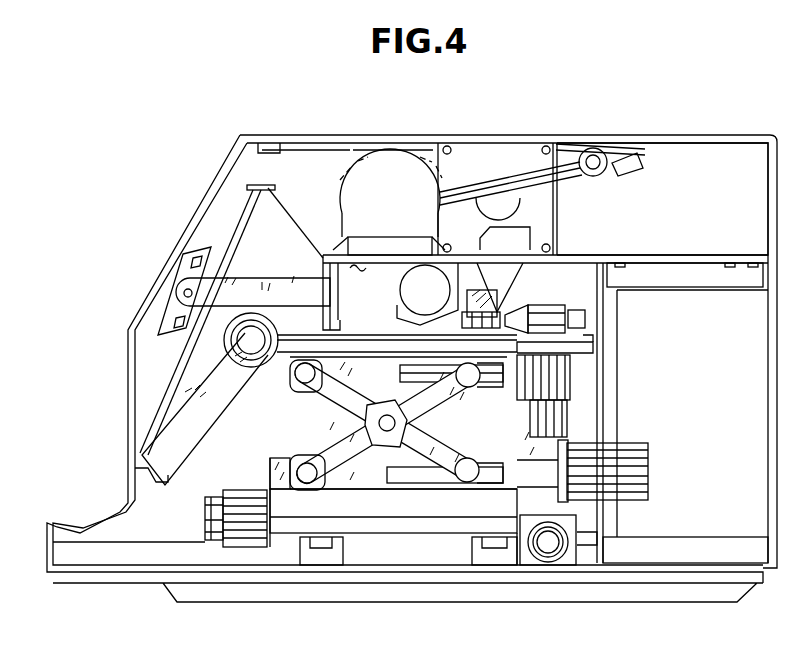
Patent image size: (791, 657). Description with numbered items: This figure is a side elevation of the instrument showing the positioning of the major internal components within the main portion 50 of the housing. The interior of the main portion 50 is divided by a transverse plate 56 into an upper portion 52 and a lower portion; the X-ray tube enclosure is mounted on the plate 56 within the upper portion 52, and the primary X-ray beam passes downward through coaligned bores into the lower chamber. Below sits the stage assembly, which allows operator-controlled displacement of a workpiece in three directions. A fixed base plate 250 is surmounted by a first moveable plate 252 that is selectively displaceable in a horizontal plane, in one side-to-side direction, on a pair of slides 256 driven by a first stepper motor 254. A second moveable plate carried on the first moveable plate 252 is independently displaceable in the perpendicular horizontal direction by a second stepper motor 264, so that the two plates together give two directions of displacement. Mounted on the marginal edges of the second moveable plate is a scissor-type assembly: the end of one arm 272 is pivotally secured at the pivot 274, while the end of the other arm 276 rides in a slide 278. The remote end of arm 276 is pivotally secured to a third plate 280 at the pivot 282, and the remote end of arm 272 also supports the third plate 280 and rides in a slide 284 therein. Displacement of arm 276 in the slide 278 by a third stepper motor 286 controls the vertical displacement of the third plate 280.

The main portion 50 is at (318, 182).
The upper portion 52 is at (673, 209).
The transverse plate 56 is at (728, 250).
The fixed base plate 250 is at (448, 565).
The first moveable plate 252 is at (417, 502).
The first stepper motor 254 is at (590, 552).
The slides 256 is at (472, 543).
The second stepper motor 264 is at (243, 490).
The arm 272 is at (317, 450).
The pivot 274 is at (330, 500).
The arm 276 is at (447, 444).
The slide 278 is at (522, 462).
The third plate 280 is at (403, 423).
The pivot 282 is at (292, 396).
The slide 284 is at (497, 383).
The third stepper motor 286 is at (648, 470).